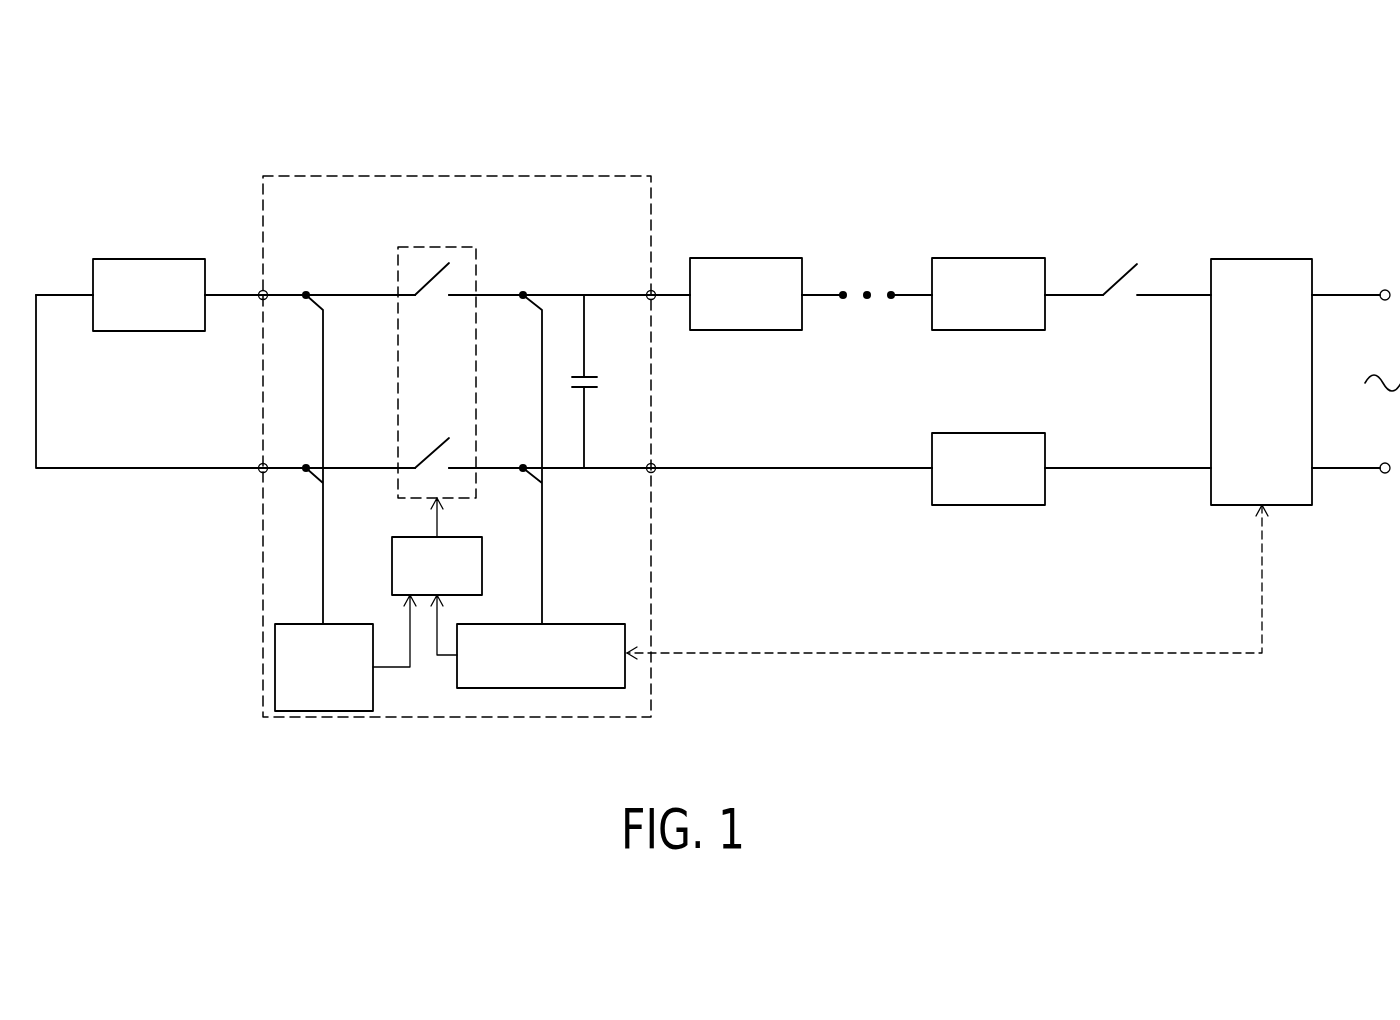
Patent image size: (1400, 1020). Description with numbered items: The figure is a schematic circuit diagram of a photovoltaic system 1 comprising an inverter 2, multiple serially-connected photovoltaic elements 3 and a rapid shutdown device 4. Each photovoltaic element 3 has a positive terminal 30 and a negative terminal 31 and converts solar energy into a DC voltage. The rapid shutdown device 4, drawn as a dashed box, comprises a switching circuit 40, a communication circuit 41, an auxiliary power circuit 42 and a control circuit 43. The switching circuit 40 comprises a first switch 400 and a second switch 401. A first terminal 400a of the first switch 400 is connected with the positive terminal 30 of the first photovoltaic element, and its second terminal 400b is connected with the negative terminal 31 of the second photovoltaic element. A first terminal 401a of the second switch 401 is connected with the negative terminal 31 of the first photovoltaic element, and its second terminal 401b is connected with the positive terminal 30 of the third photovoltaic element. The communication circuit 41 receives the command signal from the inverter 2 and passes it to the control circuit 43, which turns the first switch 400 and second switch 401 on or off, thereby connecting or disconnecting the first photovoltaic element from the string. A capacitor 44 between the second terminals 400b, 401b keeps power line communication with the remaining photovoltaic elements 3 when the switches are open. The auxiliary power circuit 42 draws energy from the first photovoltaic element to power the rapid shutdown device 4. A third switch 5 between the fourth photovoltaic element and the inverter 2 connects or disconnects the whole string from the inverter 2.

The photovoltaic system 1 is at (1345, 85).
The inverter 2 is at (1265, 259).
The photovoltaic element 3 is at (150, 259).
The positive terminal 30 is at (208, 295).
The negative terminal 31 is at (90, 295).
The rapid shutdown device 4 is at (443, 176).
The switching circuit 40 is at (443, 247).
The first switch 400 is at (442, 300).
The first terminal of the first switch 400a is at (397, 295).
The second terminal of the first switch 400b is at (497, 295).
The second switch 401 is at (463, 437).
The first terminal of the second switch 401a is at (397, 468).
The second terminal of the second switch 401b is at (482, 468).
The communication circuit 41 is at (557, 624).
The auxiliary power circuit 42 is at (315, 624).
The control circuit 43 is at (457, 537).
The capacitor 44 is at (597, 380).
The third switch 5 is at (1162, 266).